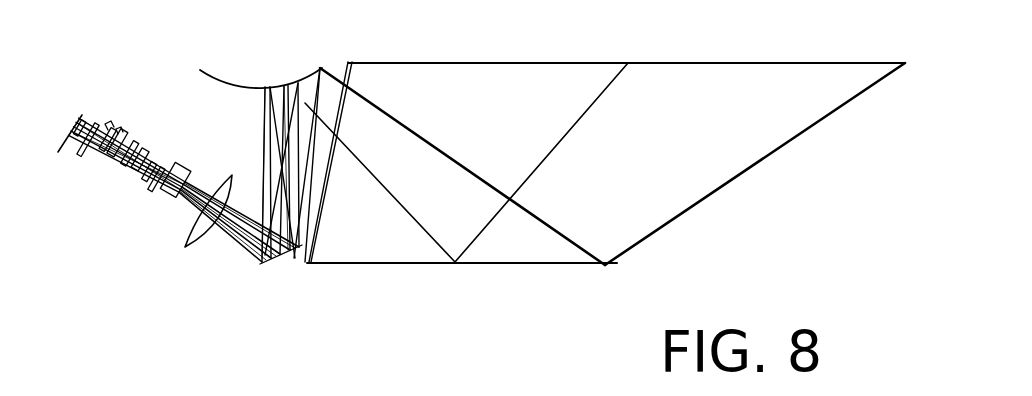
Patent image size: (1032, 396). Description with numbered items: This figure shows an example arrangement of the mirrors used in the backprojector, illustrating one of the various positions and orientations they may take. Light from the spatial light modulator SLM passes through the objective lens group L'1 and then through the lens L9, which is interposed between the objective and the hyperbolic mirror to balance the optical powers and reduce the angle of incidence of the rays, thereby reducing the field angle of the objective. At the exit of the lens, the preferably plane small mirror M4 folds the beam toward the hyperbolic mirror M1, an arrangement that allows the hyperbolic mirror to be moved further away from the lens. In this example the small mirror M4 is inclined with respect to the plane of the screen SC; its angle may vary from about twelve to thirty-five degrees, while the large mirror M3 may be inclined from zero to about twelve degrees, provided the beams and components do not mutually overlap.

The spatial light modulator SLM is at (78, 122).
The lens group L'1 is at (130, 175).
The lens L9 is at (208, 230).
The small mirror M4 is at (283, 270).
The concave mirror M1 is at (259, 87).
The large mirror M3 is at (462, 279).
The screen SC is at (626, 50).